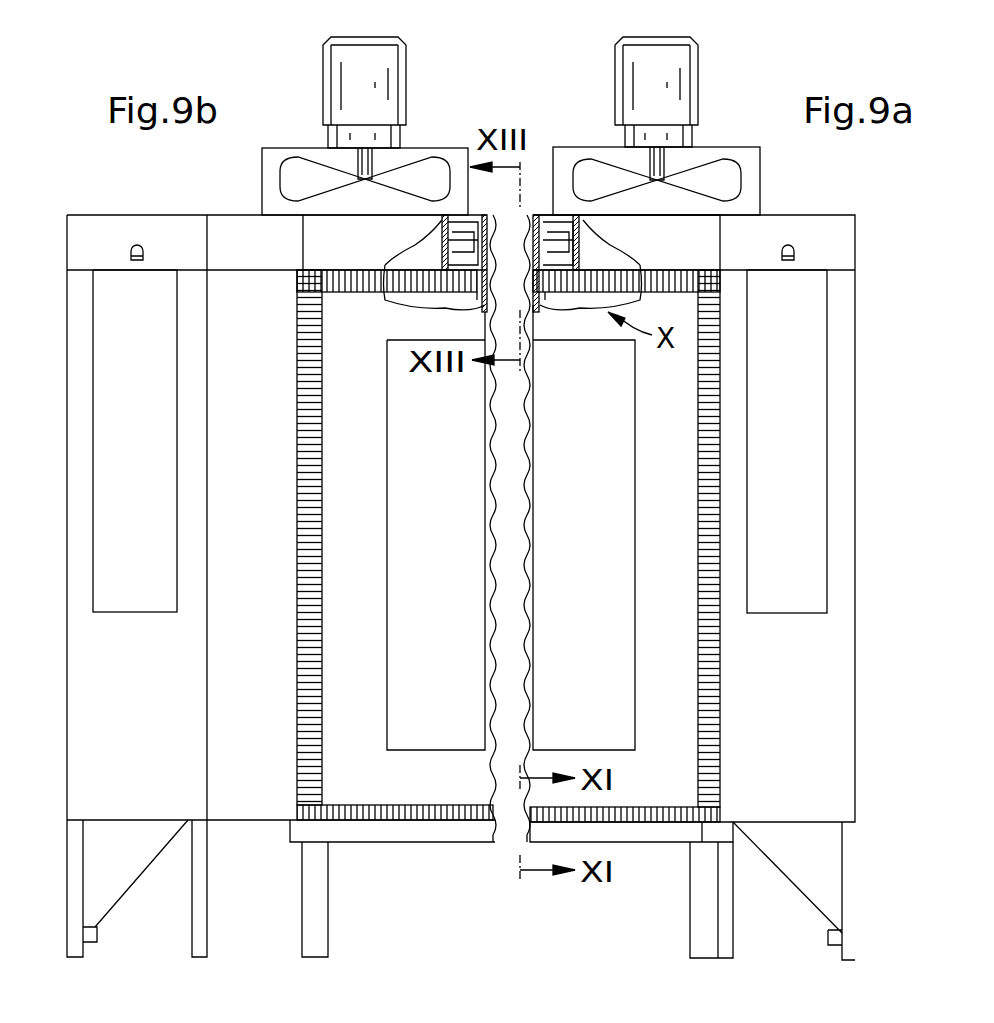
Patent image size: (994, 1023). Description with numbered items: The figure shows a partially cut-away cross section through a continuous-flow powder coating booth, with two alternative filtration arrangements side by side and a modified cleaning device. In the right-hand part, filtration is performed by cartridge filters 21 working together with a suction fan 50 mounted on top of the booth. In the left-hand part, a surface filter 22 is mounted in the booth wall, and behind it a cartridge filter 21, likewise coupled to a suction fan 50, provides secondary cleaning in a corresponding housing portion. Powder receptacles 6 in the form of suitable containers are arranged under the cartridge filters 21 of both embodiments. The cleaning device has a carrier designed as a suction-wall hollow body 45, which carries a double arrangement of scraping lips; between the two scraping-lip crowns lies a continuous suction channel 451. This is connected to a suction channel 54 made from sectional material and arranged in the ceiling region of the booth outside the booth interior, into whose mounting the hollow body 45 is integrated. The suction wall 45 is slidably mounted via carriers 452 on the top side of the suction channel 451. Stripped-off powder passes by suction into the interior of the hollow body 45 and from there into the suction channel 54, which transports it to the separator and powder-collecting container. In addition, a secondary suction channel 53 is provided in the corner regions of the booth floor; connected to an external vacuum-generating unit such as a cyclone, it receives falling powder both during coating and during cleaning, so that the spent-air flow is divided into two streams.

In FIG. 9b, the powder receptacle 6 is at (117, 870).
In FIG. 9a, the powder receptacle 6 is at (812, 893).
In FIG. 9b, the cartridge filter 21 is at (177, 400).
In FIG. 9a, the cartridge filter 21 is at (787, 613).
In FIG. 9b, the surface filter 22 is at (297, 677).
In FIG. 9b, the suction-wall hollow body 45 is at (368, 596).
In FIG. 9b, the suction fan 50 is at (333, 74).
In FIG. 9a, the suction fan 50 is at (690, 74).
In FIG. 9b, the secondary suction channel 53 is at (298, 832).
In FIG. 9a, the secondary suction channel 53 is at (722, 832).
In FIG. 9a, the suction channel 54 is at (626, 238).
In FIG. 9a, the continuous suction channel 451 is at (570, 300).
In FIG. 9a, the carrier 452 is at (635, 455).